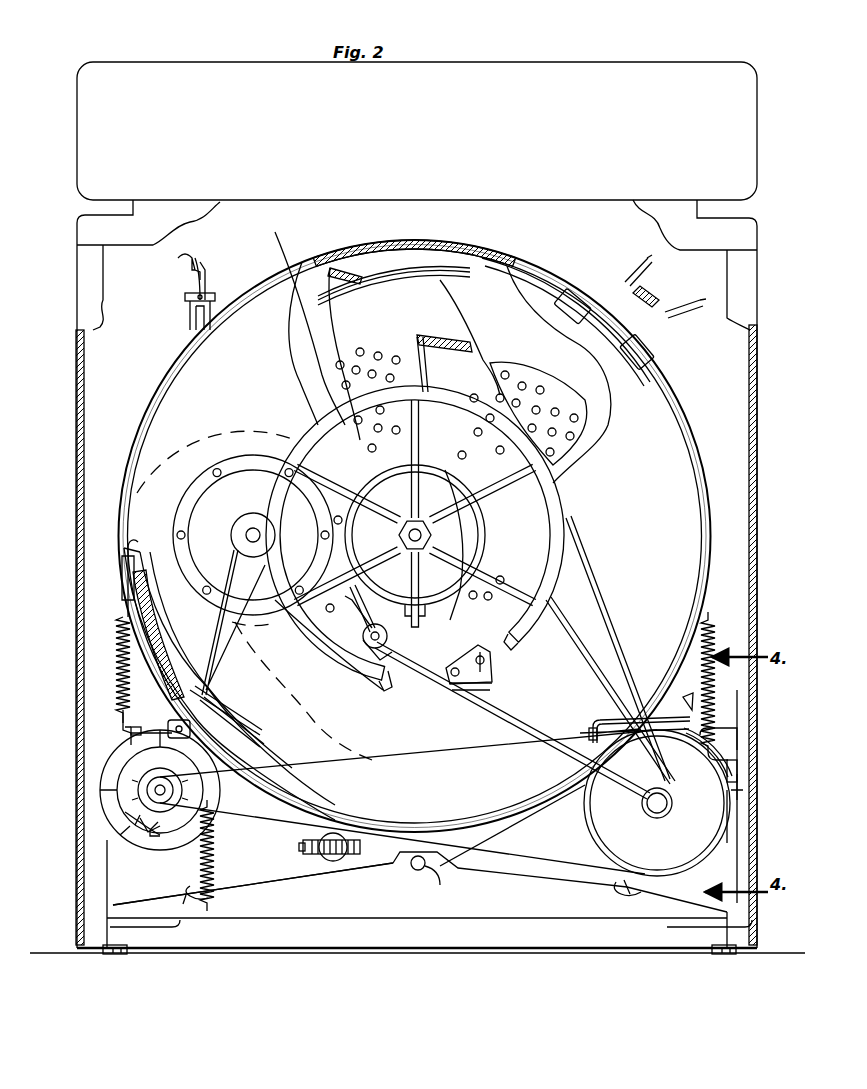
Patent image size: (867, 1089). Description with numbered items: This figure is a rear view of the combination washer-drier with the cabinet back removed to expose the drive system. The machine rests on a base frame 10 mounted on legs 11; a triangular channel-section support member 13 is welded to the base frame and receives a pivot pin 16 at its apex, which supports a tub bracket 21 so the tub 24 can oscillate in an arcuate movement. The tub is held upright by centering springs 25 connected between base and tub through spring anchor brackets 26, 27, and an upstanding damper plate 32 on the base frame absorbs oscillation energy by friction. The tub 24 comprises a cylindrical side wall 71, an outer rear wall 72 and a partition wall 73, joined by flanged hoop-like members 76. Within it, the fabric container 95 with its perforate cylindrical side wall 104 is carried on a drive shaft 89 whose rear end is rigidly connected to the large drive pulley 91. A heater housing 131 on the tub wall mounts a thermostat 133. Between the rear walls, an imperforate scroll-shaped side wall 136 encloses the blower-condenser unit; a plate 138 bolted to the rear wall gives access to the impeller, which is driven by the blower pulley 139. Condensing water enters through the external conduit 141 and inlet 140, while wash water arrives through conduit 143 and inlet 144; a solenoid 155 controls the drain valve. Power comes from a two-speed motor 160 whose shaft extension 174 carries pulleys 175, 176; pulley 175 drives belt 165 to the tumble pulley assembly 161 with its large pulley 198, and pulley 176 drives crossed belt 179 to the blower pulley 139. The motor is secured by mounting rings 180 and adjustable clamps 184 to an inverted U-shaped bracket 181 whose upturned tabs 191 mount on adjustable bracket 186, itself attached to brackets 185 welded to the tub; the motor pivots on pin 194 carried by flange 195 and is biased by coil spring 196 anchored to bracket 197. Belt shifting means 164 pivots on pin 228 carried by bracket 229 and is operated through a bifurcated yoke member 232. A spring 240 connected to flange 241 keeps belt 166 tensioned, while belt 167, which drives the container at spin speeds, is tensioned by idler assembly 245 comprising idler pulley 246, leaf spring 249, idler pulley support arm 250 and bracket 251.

The base frame 10 is at (302, 935).
The legs 11 is at (127, 953).
The support member 13 is at (300, 886).
The pivot pin 16 is at (430, 870).
The tub bracket 21 is at (497, 828).
The tub 24 is at (133, 374).
The centering springs 25 is at (228, 842).
The spring anchor bracket 26 is at (208, 893).
The spring anchor bracket 27 is at (265, 790).
The damper plate 32 is at (740, 867).
The cylindrical side wall 71 is at (365, 248).
The outer rear wall 72 is at (658, 475).
The partition wall 73 is at (508, 329).
The flanged hoop-like members 76 is at (700, 448).
The drive shaft 89 is at (413, 528).
The large drive pulley 91 is at (562, 502).
The fabric container 95 is at (428, 262).
The perforate cylindrical side wall 104 is at (346, 270).
The heater housing 131 is at (570, 263).
The thermostat 133 is at (658, 294).
The scroll-shaped side wall 136 is at (290, 706).
The plate 138 is at (207, 527).
The blower pulley 139 is at (243, 532).
The inlet 140 is at (192, 316).
The external conduit 141 is at (186, 266).
The conduit 143 is at (202, 252).
The inlet 144 is at (186, 297).
The solenoid 155 is at (340, 858).
The two-speed motor 160 is at (112, 812).
The tumble pulley assembly 161 is at (708, 820).
The belt shifting means 164 is at (673, 698).
The belt 165 is at (366, 752).
The belt 166 is at (604, 604).
The belt 167 is at (605, 652).
The shaft extension 174 is at (135, 785).
The pulley 175 is at (153, 790).
The pulley 176 is at (122, 800).
The belt 179 is at (220, 632).
The mounting ring 180 is at (130, 830).
The inverted U-shaped bracket 181 is at (128, 737).
The adjustable clamps 184 is at (146, 832).
The brackets 185 is at (206, 706).
The adjustable bracket 186 is at (113, 670).
The upturned tabs 191 is at (222, 738).
The pin 194 is at (210, 730).
The flange 195 is at (172, 736).
The coil spring 196 is at (112, 620).
The bracket 197 is at (125, 562).
The large pulley 198 is at (745, 792).
The pin 228 is at (653, 712).
The bracket 229 is at (668, 752).
The bifurcated yoke member 232 is at (738, 735).
The spring 240 is at (712, 622).
The flange 241 is at (740, 776).
The idler assembly 245 is at (452, 632).
The idler pulley 246 is at (362, 636).
The leaf spring 249 is at (455, 690).
The idler pulley support arm 250 is at (390, 644).
The bracket 251 is at (486, 672).